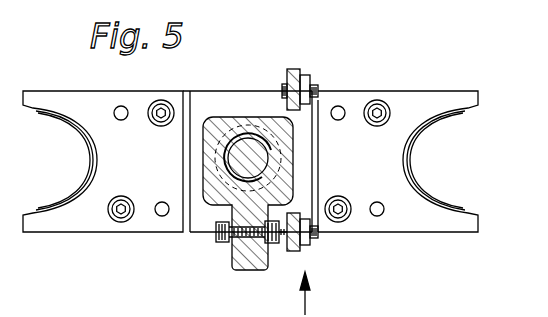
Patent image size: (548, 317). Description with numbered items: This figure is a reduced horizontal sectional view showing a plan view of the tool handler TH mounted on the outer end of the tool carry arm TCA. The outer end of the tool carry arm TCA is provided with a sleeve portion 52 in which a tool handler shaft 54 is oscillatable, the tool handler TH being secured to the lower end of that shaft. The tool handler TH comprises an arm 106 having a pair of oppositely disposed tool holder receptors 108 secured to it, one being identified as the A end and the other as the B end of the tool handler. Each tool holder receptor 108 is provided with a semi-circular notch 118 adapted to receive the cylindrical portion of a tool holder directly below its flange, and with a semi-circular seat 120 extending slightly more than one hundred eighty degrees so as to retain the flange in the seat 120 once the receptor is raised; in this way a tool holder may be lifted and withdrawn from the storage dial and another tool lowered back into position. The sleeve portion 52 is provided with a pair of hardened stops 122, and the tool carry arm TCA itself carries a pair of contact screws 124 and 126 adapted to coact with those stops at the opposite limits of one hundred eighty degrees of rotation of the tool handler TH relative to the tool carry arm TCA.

The A end of the tool handler A is at (73, 222).
The B end of the tool handler B is at (425, 224).
The sleeve portion 52 is at (216, 168).
The tool handler shaft 54 is at (272, 157).
The arm 106 is at (200, 220).
The tool holder receptors 108 is at (172, 125).
The semi-circular notch 118 is at (418, 183).
The semi-circular seat 120 is at (430, 202).
The hardened stops 122 is at (224, 242).
The contact screw 124 is at (319, 237).
The contact screw 126 is at (322, 83).
The tool handler TH is at (165, 222).
The tool carry arm TCA is at (240, 262).